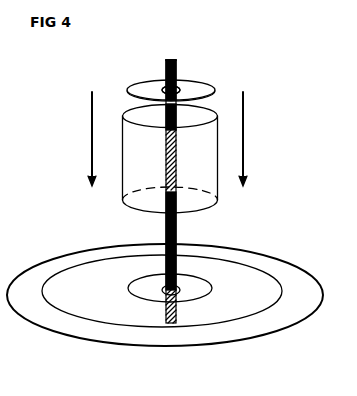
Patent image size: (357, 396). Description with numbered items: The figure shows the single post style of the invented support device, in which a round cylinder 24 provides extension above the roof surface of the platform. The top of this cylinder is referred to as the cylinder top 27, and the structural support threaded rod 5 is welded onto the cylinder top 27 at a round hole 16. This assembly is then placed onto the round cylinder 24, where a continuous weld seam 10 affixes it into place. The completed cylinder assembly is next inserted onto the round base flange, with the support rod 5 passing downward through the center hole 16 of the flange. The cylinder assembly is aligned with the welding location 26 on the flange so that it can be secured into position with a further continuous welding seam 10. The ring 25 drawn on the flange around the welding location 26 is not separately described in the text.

The assembly 5 is at (163, 63).
The threaded rod 10 is at (182, 78).
The disc 27 is at (183, 82).
The aperture 16 is at (163, 85).
The cylinder 24 is at (130, 145).
The base ring 25 is at (63, 270).
The base 26 is at (130, 295).